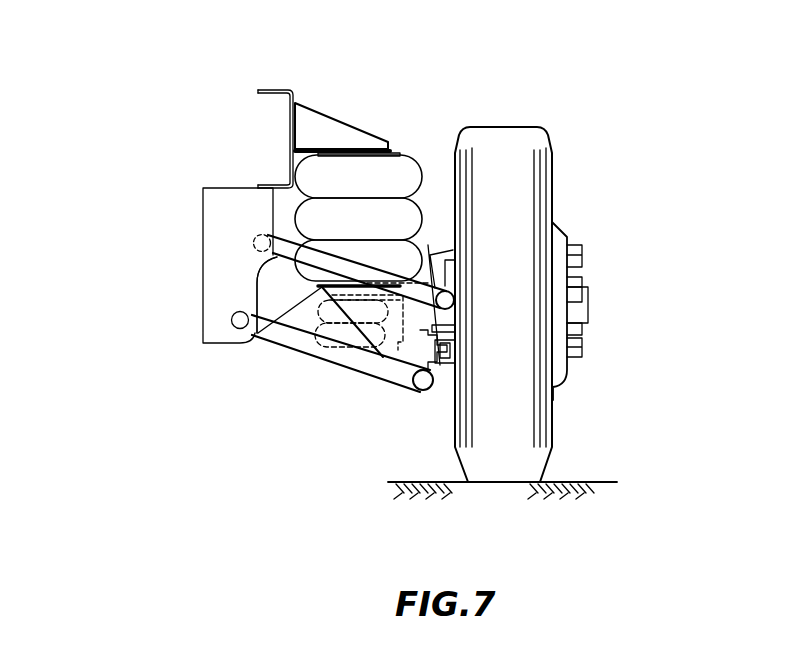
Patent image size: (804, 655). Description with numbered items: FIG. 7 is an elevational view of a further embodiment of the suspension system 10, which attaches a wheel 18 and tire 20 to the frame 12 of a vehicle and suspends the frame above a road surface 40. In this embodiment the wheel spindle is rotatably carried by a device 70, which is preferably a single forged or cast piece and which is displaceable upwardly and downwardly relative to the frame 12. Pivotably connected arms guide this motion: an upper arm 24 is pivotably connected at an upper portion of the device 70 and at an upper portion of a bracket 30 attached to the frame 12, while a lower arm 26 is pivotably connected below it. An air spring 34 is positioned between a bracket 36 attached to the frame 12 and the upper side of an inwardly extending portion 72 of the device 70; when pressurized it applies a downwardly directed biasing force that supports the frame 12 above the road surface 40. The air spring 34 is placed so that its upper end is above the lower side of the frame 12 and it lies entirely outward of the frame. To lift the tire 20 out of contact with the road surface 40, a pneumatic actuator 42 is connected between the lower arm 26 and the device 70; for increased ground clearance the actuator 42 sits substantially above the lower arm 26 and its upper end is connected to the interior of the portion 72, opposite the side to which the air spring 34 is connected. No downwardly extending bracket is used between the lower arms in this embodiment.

The suspension system 10 is at (132, 85).
The frame 12 is at (278, 88).
The wheel 18 is at (568, 236).
The tire 20 is at (552, 160).
The upper arm 24 is at (257, 277).
The lower arm 26 is at (283, 347).
The bracket 30 is at (203, 240).
The air spring 34 is at (425, 160).
The bracket 36 is at (328, 112).
The road surface 40 is at (617, 483).
The pneumatic actuator 42 is at (318, 331).
The device 70 is at (365, 343).
The inwardly extending portion 72 is at (258, 333).